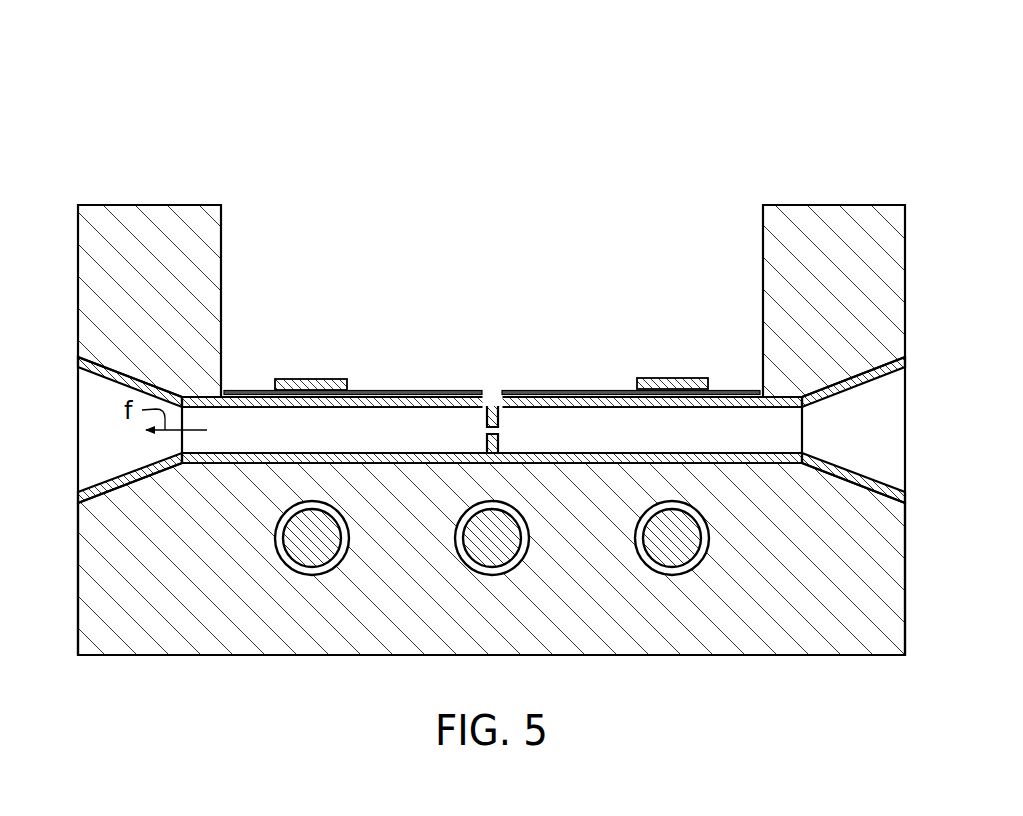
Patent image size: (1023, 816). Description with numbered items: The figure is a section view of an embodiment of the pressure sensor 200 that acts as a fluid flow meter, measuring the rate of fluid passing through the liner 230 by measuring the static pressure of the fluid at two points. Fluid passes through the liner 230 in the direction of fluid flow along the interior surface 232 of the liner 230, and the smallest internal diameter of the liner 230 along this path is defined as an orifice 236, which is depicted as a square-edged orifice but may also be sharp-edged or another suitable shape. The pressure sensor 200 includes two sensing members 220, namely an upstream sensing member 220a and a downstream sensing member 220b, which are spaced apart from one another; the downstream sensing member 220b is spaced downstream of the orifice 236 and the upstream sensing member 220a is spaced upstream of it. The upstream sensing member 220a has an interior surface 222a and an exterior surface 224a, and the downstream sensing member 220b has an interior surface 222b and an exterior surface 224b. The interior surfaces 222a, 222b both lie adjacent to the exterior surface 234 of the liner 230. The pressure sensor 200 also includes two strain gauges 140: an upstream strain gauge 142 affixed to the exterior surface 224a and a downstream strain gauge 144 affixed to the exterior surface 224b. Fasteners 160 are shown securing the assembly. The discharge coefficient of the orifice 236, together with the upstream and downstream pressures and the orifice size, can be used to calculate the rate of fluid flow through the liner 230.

The pressure sensor 200 is at (748, 136).
The strain gauge 140 is at (493, 342).
The upstream strain gauge 142 is at (663, 378).
The downstream strain gauge 144 is at (322, 379).
The fastener 160 is at (307, 530).
The sensing member 220 is at (492, 350).
The upstream sensing member 220a is at (735, 391).
The downstream sensing member 220b is at (250, 391).
The interior surface of upstream sensing member 222a is at (598, 397).
The interior surface of downstream sensing member 222b is at (352, 395).
The exterior surface of upstream sensing member 224a is at (549, 349).
The exterior surface of downstream sensing member 224b is at (420, 390).
The liner 230 is at (873, 483).
The interior surface of liner 232 is at (777, 408).
The exterior surface of liner 234 is at (493, 391).
The orifice 236 is at (487, 429).